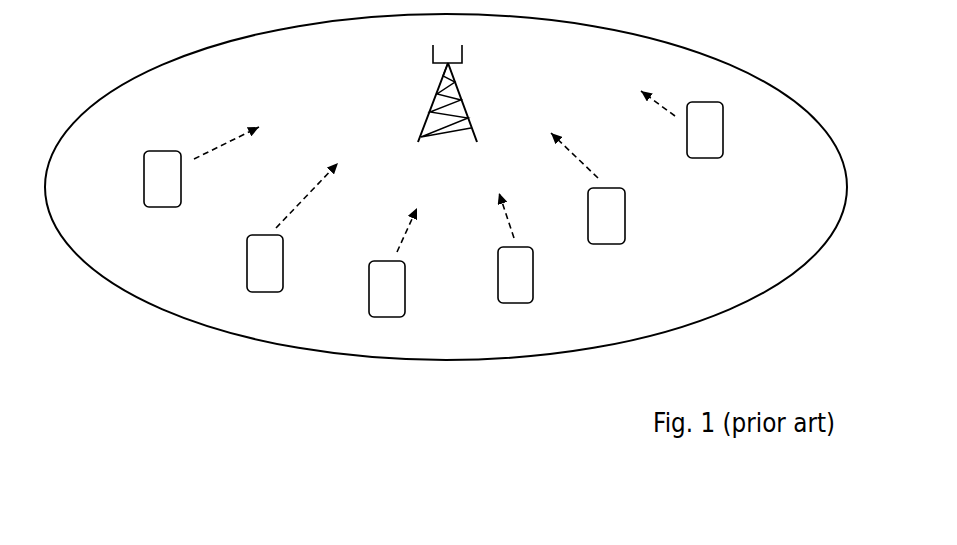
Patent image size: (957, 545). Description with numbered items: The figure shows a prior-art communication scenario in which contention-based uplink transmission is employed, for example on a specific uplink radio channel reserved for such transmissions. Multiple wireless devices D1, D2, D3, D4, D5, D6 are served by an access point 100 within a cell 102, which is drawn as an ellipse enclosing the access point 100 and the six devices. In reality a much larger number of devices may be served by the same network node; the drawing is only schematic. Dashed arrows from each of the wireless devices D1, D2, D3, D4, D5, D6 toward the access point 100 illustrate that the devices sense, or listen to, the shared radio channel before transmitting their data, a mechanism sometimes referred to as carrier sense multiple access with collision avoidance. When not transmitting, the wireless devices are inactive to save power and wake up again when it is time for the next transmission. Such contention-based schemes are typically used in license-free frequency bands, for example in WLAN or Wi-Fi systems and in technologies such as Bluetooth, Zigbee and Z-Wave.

The access point 100 is at (476, 86).
The cell 102 is at (677, 38).
The wireless device D1 is at (181, 189).
The wireless device D2 is at (283, 273).
The wireless device D3 is at (405, 300).
The wireless device D4 is at (533, 286).
The wireless device D5 is at (625, 228).
The wireless device D6 is at (723, 143).